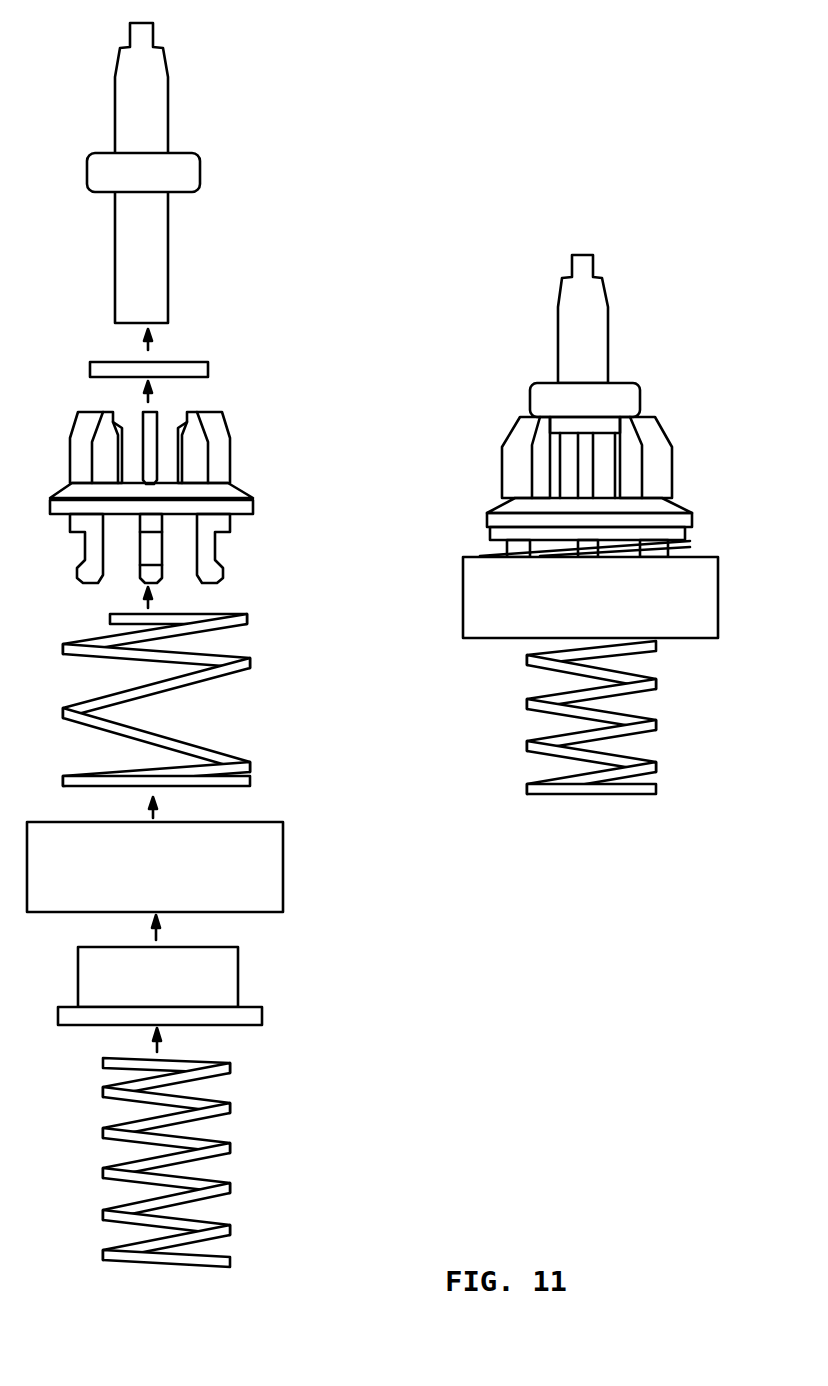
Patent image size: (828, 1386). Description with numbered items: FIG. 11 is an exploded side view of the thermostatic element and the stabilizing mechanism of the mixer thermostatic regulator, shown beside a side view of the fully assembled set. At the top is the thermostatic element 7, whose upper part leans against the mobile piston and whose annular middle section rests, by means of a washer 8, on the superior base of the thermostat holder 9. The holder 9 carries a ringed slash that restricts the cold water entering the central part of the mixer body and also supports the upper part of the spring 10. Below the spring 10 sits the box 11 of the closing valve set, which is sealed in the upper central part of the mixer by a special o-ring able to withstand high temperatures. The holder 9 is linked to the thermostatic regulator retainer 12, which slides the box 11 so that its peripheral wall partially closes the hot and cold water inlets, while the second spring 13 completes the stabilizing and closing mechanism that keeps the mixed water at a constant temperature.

The thermostatic element 7 is at (170, 140).
The washer plate 8 is at (207, 360).
The thermostat holder 9 is at (233, 473).
The spring 10 is at (250, 660).
The box 11 is at (160, 882).
The thermostatic regulator retainer 12 is at (160, 986).
The spring 13 is at (225, 1148).